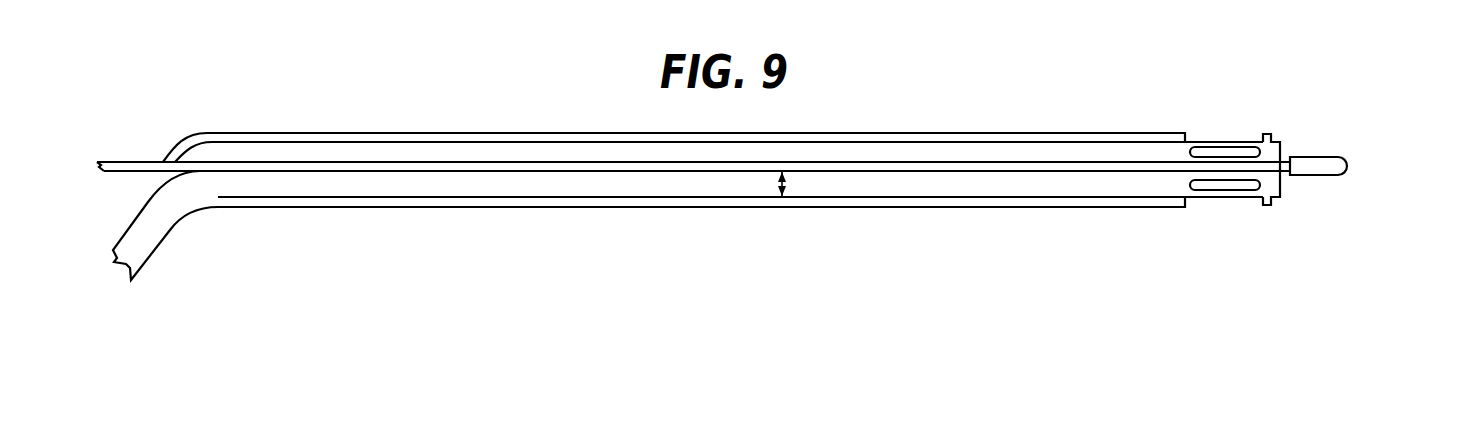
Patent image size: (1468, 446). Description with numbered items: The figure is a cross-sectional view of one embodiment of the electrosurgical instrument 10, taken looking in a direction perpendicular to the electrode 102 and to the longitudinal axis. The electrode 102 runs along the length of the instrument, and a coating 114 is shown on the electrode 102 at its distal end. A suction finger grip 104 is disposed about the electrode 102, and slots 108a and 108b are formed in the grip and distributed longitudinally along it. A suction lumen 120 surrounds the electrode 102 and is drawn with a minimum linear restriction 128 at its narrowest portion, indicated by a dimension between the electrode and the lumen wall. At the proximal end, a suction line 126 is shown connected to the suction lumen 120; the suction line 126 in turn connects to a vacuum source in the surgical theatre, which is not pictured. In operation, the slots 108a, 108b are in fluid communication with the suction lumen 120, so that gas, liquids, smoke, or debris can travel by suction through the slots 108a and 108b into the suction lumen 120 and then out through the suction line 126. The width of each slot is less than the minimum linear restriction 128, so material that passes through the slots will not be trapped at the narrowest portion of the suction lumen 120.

The electrosurgical instrument 10 is at (293, 111).
The electrode 102 is at (588, 163).
The suction finger grip 104 is at (1228, 132).
The slot 108a is at (1207, 152).
The slot 108b is at (1235, 182).
The coating 114 is at (1352, 162).
The suction lumen 120 is at (432, 182).
The suction line 126 is at (150, 232).
The minimum linear restriction 128 is at (782, 185).